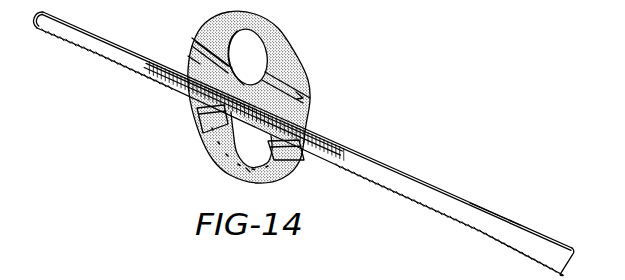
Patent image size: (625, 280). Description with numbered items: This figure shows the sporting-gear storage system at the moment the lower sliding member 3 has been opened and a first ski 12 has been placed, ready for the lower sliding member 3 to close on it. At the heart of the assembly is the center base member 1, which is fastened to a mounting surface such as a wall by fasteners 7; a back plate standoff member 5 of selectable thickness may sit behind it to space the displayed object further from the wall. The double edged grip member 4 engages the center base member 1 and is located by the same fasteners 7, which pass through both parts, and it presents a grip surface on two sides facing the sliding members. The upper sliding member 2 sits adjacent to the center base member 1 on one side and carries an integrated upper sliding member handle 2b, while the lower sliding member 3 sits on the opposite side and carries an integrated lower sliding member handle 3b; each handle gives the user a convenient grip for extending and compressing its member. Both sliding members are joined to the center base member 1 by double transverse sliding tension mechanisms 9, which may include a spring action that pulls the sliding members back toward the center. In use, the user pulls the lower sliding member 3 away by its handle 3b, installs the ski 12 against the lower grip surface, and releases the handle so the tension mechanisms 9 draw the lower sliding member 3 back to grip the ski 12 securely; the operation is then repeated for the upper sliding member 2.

The center base member 1 is at (262, 107).
The upper sliding member 2 is at (304, 54).
The upper sliding member handle 2b is at (250, 33).
The lower sliding member 3 is at (216, 159).
The lower sliding member handle 3b is at (245, 168).
The double edged grip member 4 is at (176, 57).
The back plate standoff member 5 is at (237, 42).
The fastener 7 is at (196, 72).
The double transverse sliding tension mechanism 9 is at (240, 123).
The ski 12 is at (500, 206).